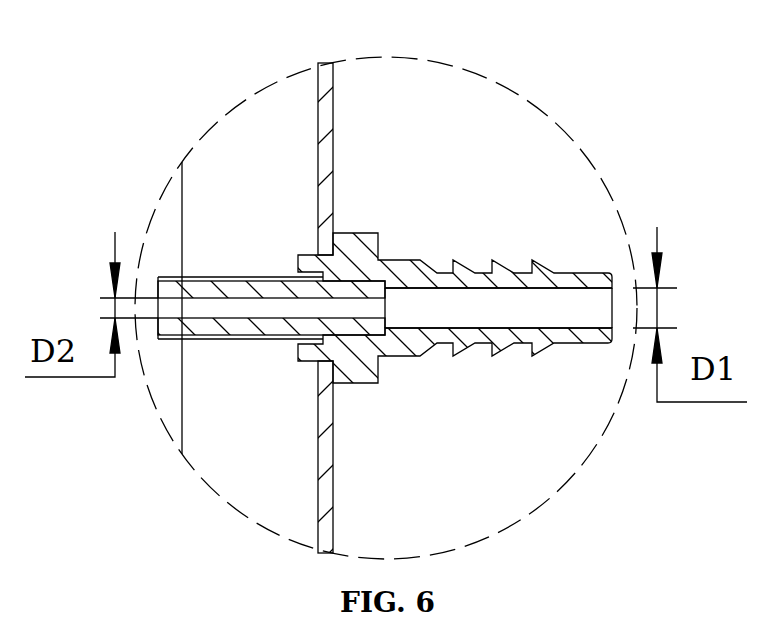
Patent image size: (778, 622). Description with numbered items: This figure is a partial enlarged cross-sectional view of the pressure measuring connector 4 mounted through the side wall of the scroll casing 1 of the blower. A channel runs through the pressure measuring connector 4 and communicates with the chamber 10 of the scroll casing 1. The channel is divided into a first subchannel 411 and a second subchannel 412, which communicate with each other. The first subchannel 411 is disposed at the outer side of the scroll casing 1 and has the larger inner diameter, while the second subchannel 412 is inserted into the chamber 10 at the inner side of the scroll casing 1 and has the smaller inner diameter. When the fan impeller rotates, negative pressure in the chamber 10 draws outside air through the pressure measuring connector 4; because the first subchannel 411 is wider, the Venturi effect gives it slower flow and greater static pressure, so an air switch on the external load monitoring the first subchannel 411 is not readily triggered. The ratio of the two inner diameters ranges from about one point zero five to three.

The scroll casing 1 is at (327, 158).
The pressure measuring connector 4 is at (353, 272).
The first subchannel 411 is at (507, 307).
The second subchannel 412 is at (245, 310).
The chamber 10 is at (235, 462).